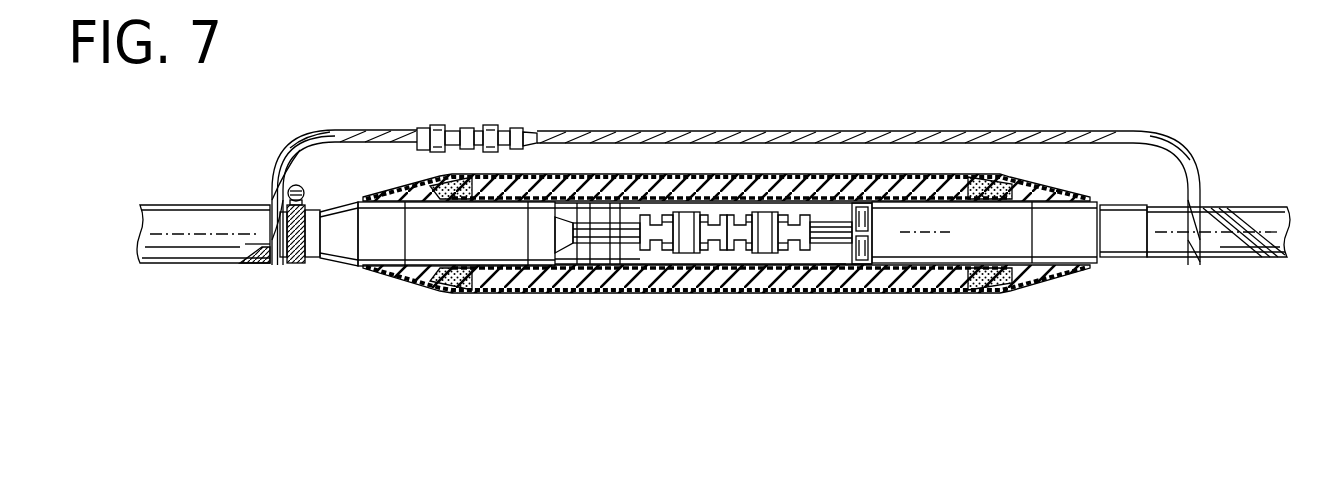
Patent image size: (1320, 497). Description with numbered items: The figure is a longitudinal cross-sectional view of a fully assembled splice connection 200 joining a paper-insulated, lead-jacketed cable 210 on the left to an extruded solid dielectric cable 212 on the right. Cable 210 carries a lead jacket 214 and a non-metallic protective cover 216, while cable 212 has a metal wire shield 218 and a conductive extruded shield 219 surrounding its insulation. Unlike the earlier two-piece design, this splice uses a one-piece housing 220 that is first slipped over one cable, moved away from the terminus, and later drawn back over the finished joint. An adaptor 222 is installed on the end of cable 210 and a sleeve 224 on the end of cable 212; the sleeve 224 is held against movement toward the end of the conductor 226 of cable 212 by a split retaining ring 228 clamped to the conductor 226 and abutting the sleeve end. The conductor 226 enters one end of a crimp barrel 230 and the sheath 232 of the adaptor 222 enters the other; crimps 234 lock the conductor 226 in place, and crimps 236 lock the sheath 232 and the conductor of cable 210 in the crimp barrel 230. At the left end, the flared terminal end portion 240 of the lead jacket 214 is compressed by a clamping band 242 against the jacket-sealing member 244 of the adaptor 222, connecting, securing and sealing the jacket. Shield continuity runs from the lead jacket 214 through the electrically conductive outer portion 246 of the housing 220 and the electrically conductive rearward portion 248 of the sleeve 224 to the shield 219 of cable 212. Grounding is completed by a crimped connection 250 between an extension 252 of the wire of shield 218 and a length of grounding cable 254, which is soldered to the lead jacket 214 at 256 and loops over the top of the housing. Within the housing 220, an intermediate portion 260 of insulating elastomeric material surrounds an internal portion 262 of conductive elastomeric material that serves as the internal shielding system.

The splice connection 200 is at (774, 296).
The paper-insulated, lead-jacketed cable 210 is at (149, 205).
The extruded solid dielectric cable 212 is at (1163, 260).
The lead jacket 214 is at (253, 258).
The non-metallic protective cover 216 is at (160, 246).
The metal wire shield 218 is at (1215, 207).
The conductive extruded shield 219 is at (1225, 246).
The one-piece housing 220 is at (628, 293).
The adaptor 222 is at (477, 236).
The sleeve 224 is at (1015, 240).
The conductor 226 is at (821, 265).
The split retaining ring 228 is at (870, 240).
The crimp barrel 230 is at (683, 253).
The sheath 232 is at (600, 228).
The crimps 234 is at (791, 220).
The crimps 236 is at (663, 216).
The flared terminal end portion 240 is at (320, 201).
The clamping band 242 is at (295, 266).
The jacket-sealing member 244 is at (340, 243).
The electrically conductive outer portion 246 is at (460, 292).
The electrically conductive rearward portion 248 is at (1060, 214).
The crimped connection 250 is at (488, 125).
The extension 252 is at (701, 130).
The grounding cable 254 is at (381, 128).
The solder joint 256 is at (266, 222).
The intermediate portion 260 is at (529, 293).
The internal portion 262 is at (556, 291).